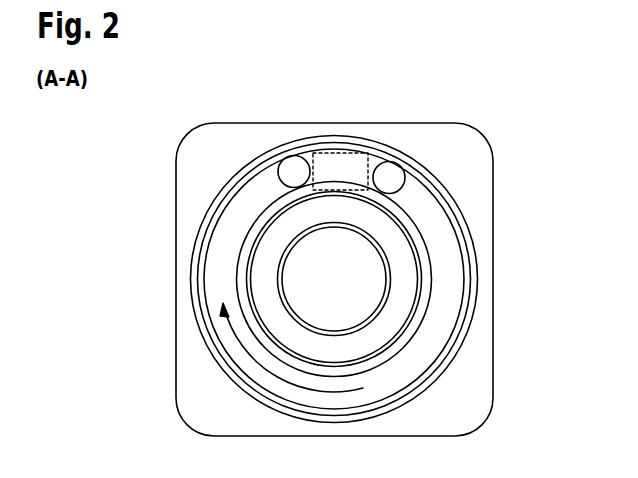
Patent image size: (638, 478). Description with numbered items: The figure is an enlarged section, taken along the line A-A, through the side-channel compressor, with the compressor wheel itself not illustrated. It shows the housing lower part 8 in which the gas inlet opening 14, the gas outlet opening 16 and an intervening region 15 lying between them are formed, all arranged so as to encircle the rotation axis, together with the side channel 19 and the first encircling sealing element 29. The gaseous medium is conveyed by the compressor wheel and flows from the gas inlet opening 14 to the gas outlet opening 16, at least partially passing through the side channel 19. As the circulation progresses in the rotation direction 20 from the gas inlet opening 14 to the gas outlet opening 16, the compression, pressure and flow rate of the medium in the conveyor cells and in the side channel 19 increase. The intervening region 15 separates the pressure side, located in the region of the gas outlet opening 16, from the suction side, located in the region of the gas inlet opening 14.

The housing lower part 8 is at (192, 212).
The gas inlet opening 14 is at (389, 177).
The intervening region 15 is at (343, 163).
The gas outlet opening 16 is at (295, 172).
The side channel 19 is at (450, 273).
The rotation direction 20 is at (243, 352).
The first encircling sealing element 29 is at (472, 311).